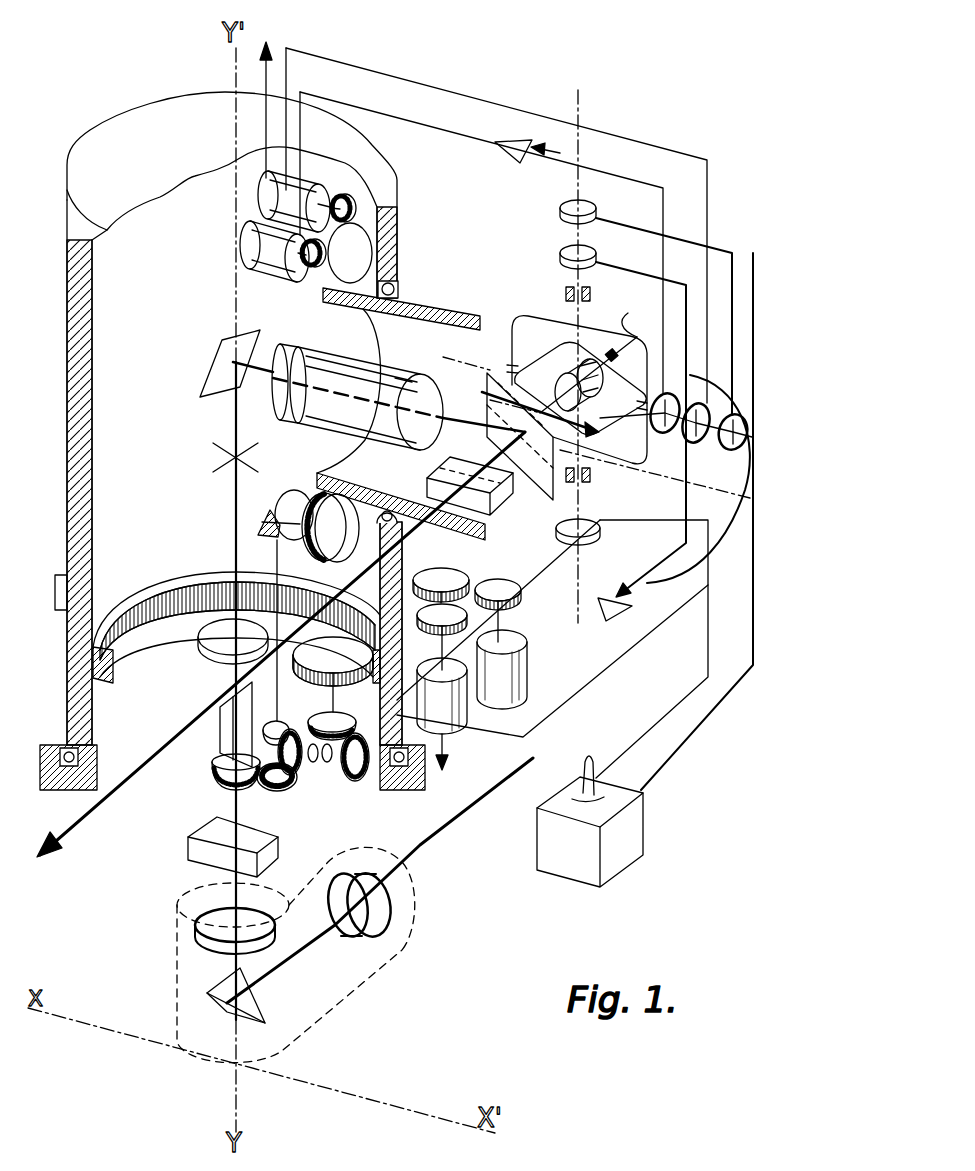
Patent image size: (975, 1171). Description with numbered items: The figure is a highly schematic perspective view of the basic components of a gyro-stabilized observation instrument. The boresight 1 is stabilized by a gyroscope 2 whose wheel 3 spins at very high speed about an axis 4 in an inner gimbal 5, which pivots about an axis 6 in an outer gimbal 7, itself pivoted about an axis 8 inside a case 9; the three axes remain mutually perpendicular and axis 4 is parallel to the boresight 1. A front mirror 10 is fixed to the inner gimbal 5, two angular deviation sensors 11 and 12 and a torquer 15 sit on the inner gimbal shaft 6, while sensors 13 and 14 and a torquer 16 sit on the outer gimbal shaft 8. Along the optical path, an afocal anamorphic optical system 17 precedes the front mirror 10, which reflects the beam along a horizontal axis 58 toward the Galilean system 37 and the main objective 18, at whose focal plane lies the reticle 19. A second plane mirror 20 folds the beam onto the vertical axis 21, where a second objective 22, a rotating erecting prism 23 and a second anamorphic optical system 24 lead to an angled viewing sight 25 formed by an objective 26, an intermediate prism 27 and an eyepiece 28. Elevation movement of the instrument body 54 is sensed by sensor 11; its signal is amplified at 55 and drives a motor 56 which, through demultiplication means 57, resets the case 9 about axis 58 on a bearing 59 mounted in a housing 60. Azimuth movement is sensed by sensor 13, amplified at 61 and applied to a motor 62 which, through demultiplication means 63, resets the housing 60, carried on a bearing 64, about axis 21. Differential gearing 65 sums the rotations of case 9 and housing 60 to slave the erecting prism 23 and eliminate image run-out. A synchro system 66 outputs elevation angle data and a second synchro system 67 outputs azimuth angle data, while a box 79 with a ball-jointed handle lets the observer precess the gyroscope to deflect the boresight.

The boresight 1 is at (60, 825).
The gyroscope 2 is at (526, 298).
The wheel 3 is at (565, 385).
The axis 4 is at (604, 356).
The inner gimbal 5 is at (598, 436).
The axis 6 is at (461, 361).
The outer gimbal 7 is at (633, 320).
The axis 8 is at (582, 98).
The case 9 is at (455, 320).
The front mirror 10 is at (556, 528).
The angular deviation sensor 11 is at (662, 431).
The angular deviation sensor 12 is at (694, 437).
The sensor 13 is at (597, 257).
The sensor 14 is at (597, 212).
The torquer 15 is at (742, 410).
The torquer 16 is at (600, 542).
The afocal anamorphic optical system 17 is at (490, 516).
The main objective 18 is at (297, 346).
The reticle 19 is at (213, 455).
The second plane mirror 20 is at (208, 372).
The vertical axis 21 is at (235, 268).
The second objective 22 is at (205, 648).
The erecting prism 23 is at (222, 728).
The second anamorphic optical system 24 is at (190, 846).
The angled viewing sight 25 is at (398, 950).
The objective 26 is at (200, 936).
The intermediate prism 27 is at (265, 1015).
The eyepiece 28 is at (413, 905).
The Galilean system 37 is at (395, 375).
The observation instrument body 54 is at (55, 782).
The amplifier 55 is at (513, 160).
The motor 56 is at (272, 262).
The gear-type demultiplication means 57 is at (372, 220).
The horizontal axis 58 is at (641, 472).
The bearing 59 is at (400, 289).
The housing 60 is at (93, 400).
The amplifier 61 is at (606, 612).
The motor 62 is at (528, 688).
The demultiplication means 63 is at (463, 566).
The bearing 64 is at (95, 755).
The differential gearing 65 is at (300, 781).
The synchro system 66 is at (305, 180).
The second synchro system 67 is at (455, 740).
The box 79 is at (640, 830).